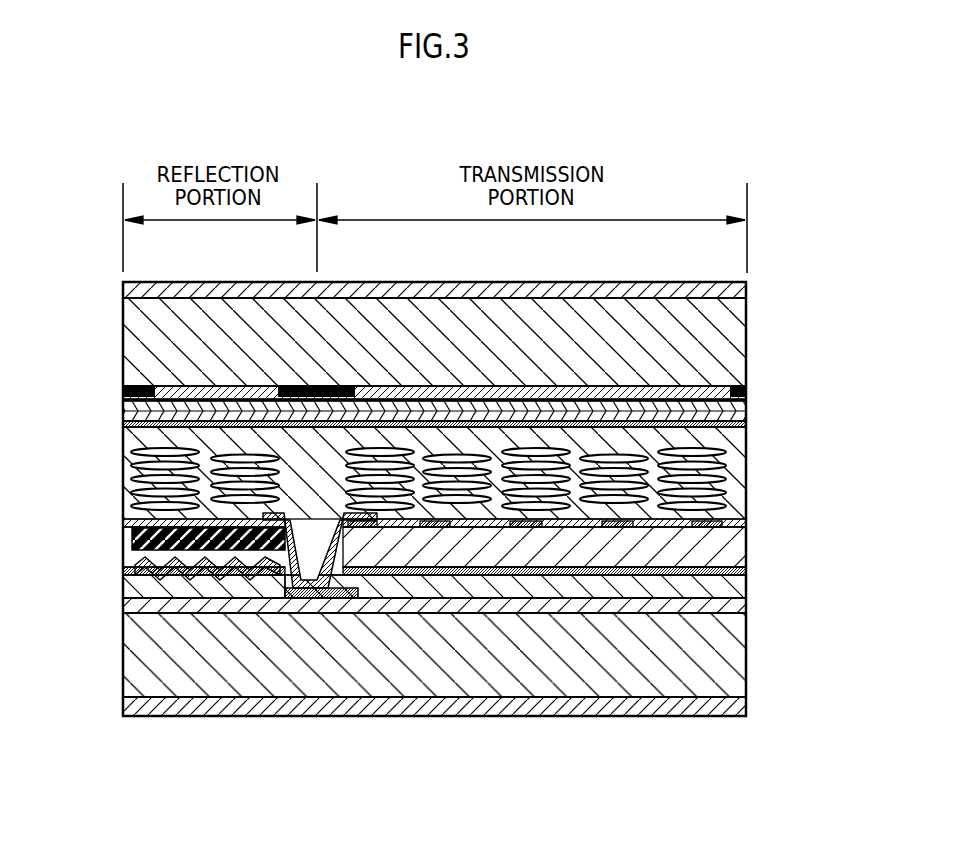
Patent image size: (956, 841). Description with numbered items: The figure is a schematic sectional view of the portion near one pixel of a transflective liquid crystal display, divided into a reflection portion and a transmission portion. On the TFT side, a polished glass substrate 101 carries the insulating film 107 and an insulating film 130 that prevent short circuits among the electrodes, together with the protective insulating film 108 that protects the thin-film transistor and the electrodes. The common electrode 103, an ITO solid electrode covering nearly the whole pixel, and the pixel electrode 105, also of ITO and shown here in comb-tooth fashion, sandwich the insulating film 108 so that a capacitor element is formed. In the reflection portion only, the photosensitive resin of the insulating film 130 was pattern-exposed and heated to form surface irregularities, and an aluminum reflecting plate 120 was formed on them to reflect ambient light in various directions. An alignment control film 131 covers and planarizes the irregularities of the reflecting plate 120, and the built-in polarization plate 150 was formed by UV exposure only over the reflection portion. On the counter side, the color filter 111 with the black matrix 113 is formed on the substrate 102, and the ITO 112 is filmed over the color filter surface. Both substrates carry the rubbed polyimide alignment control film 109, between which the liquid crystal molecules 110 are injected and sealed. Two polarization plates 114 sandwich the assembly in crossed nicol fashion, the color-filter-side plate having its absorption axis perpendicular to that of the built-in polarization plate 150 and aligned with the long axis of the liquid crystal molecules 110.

The substrate 101 is at (735, 657).
The substrate 102 is at (737, 345).
The common electrode 103 is at (590, 575).
The pixel electrode 105 is at (313, 598).
The insulating film 107 is at (445, 605).
The protective insulating film 108 is at (683, 550).
The alignment control film 109 is at (123, 421).
The liquid crystal molecules 110 is at (725, 463).
The color filter 111 is at (516, 397).
The ITO 112 is at (746, 407).
The black matrix 113 is at (315, 386).
The polarization plate 114 is at (746, 288).
The reflecting plate 120 is at (172, 583).
The insulating film 130 is at (518, 588).
The alignment control film 131 is at (123, 558).
The built-in polarization plate 150 is at (123, 535).